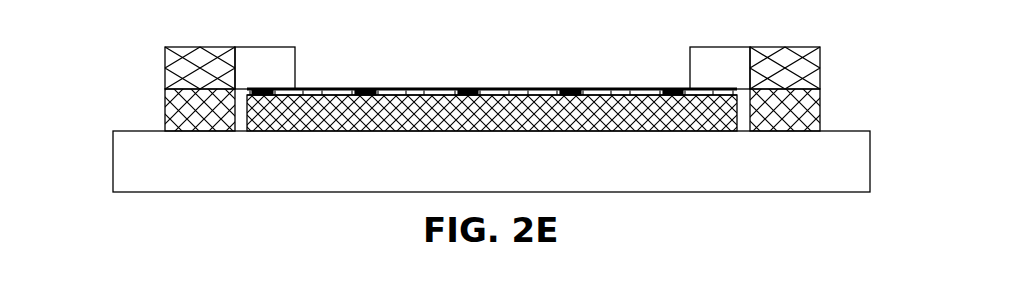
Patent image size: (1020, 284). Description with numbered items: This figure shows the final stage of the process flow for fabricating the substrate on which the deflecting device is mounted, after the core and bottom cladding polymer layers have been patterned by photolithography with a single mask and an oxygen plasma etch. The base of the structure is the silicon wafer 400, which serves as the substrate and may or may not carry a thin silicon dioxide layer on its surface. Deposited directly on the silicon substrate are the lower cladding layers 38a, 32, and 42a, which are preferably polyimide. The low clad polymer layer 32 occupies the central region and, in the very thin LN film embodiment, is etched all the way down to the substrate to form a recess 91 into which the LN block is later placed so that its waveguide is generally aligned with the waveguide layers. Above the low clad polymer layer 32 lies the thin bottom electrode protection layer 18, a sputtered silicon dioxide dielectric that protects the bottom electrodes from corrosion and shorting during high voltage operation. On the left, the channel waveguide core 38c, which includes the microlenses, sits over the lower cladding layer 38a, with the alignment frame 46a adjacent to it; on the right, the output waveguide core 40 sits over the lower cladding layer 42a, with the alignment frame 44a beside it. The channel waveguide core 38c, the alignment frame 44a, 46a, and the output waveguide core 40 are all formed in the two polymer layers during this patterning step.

The silicon wafer 400 is at (697, 193).
The low clad polymer layer 32 is at (572, 132).
The bottom electrode protection layer 18 is at (524, 88).
The channel waveguide core 38c is at (165, 72).
The lower cladding layer 38a is at (165, 112).
The alignment frame 46a is at (297, 72).
The alignment frame 44a is at (690, 72).
The output waveguide core 40 is at (820, 72).
The lower cladding layer 42a is at (820, 118).
The recess 91 is at (594, 56).